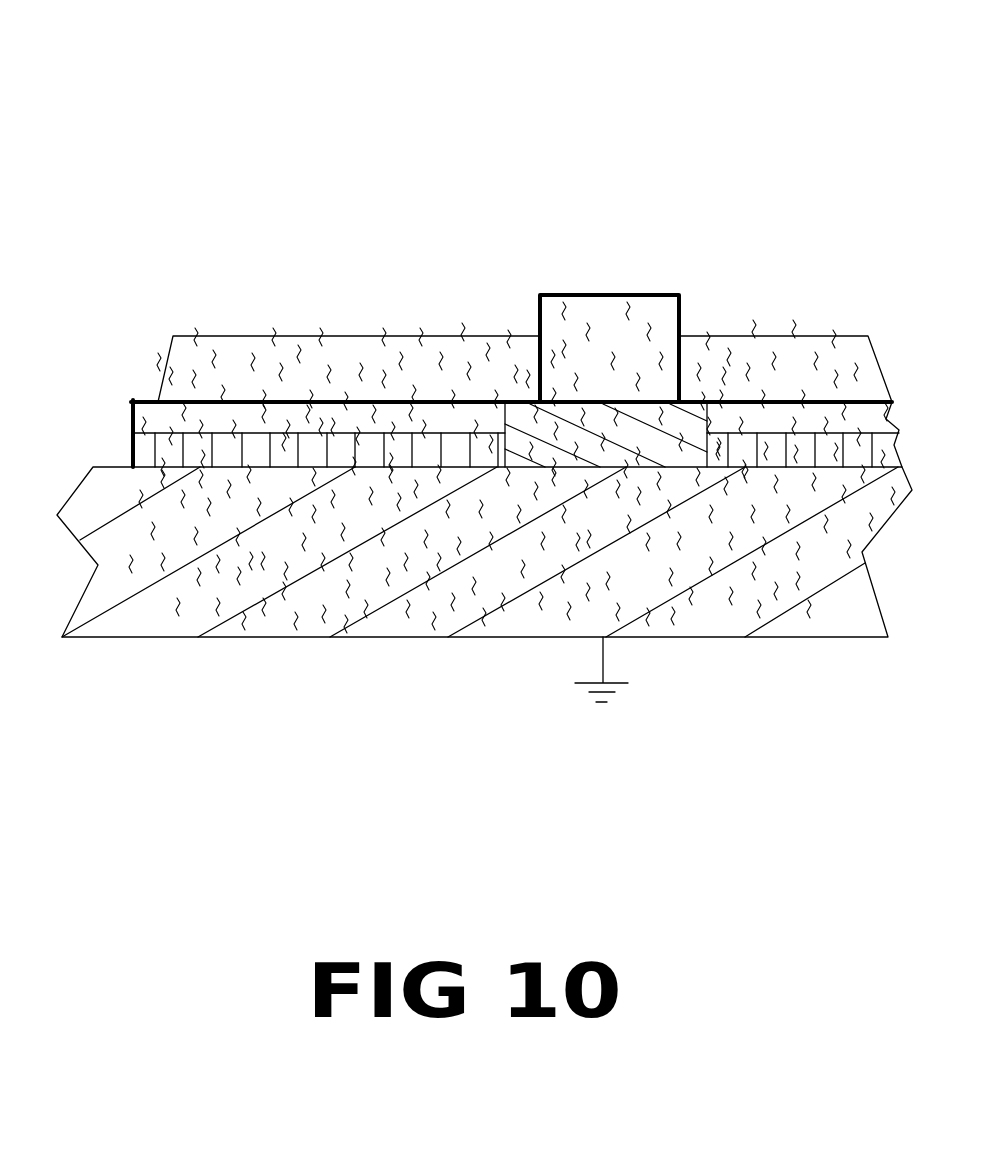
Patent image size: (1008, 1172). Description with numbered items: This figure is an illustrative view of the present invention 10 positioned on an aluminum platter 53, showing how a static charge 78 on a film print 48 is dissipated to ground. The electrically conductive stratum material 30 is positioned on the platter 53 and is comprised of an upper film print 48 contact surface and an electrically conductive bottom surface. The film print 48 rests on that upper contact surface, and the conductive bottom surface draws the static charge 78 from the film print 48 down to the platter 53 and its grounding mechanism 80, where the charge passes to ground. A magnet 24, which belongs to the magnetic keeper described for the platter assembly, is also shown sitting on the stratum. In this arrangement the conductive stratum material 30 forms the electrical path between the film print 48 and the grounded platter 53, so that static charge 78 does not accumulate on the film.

The device 10 is at (554, 140).
The magnet 24 is at (653, 308).
The electrically conductive stratum material 30 is at (213, 402).
The film print 48 is at (347, 337).
The platter 53 is at (158, 628).
The static charge 78 is at (328, 620).
The grounding mechanism 80 is at (603, 662).